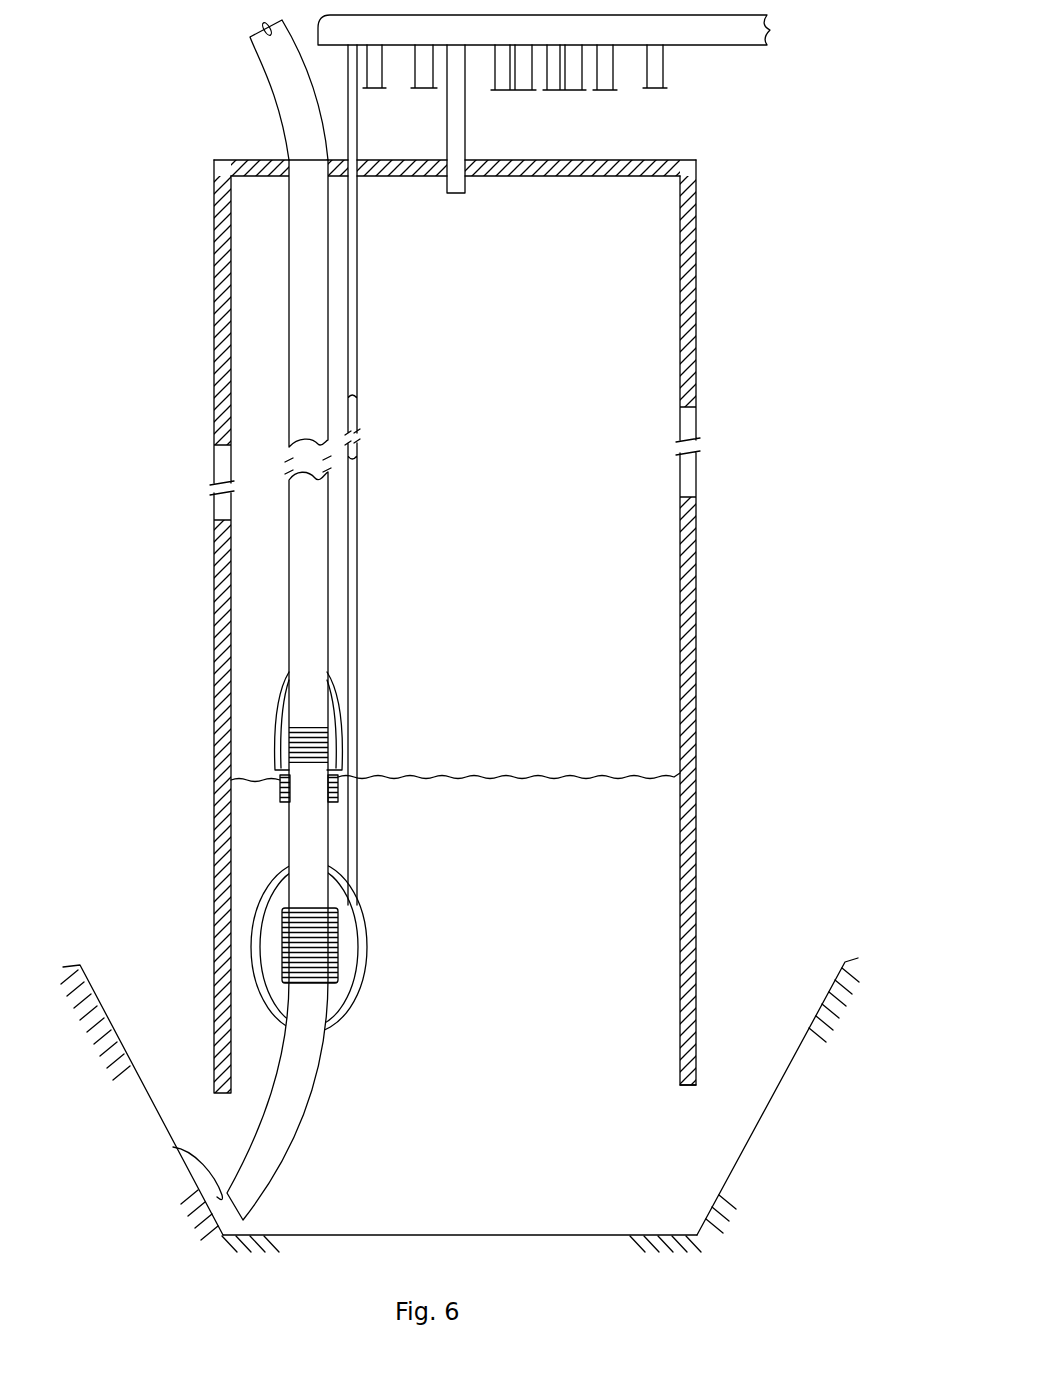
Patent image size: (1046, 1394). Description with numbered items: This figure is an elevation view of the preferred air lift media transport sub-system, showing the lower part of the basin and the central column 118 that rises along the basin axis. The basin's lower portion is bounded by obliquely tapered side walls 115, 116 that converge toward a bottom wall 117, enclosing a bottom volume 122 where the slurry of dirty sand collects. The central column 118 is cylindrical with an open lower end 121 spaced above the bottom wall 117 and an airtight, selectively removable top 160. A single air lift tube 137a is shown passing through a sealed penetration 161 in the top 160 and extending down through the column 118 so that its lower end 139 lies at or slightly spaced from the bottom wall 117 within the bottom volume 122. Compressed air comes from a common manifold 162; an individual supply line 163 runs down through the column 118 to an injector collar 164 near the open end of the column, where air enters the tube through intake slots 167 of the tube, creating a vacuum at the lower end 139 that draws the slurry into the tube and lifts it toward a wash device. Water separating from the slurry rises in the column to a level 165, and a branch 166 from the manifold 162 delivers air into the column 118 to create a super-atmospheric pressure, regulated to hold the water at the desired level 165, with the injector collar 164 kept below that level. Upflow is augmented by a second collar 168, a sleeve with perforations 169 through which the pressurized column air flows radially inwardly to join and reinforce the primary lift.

The side wall 115 is at (95, 980).
The side wall 116 is at (823, 972).
The bottom wall 117 is at (477, 1235).
The central column 118 is at (694, 320).
The lower end of central column 121 is at (688, 1090).
The bottom volume 122 is at (630, 1148).
The air lift tube 137a is at (296, 572).
The lower end of tube 139 is at (172, 1147).
The top 160 is at (677, 160).
The sealed penetration 161 is at (289, 150).
The compressed air manifold 162 is at (713, 40).
The supply line 163 is at (352, 297).
The injector collar 164 is at (268, 880).
The water level 165 is at (626, 772).
The branch 166 is at (465, 137).
The intake slots 167 is at (282, 935).
The second collar 168 is at (275, 738).
The perforations 169 is at (280, 790).